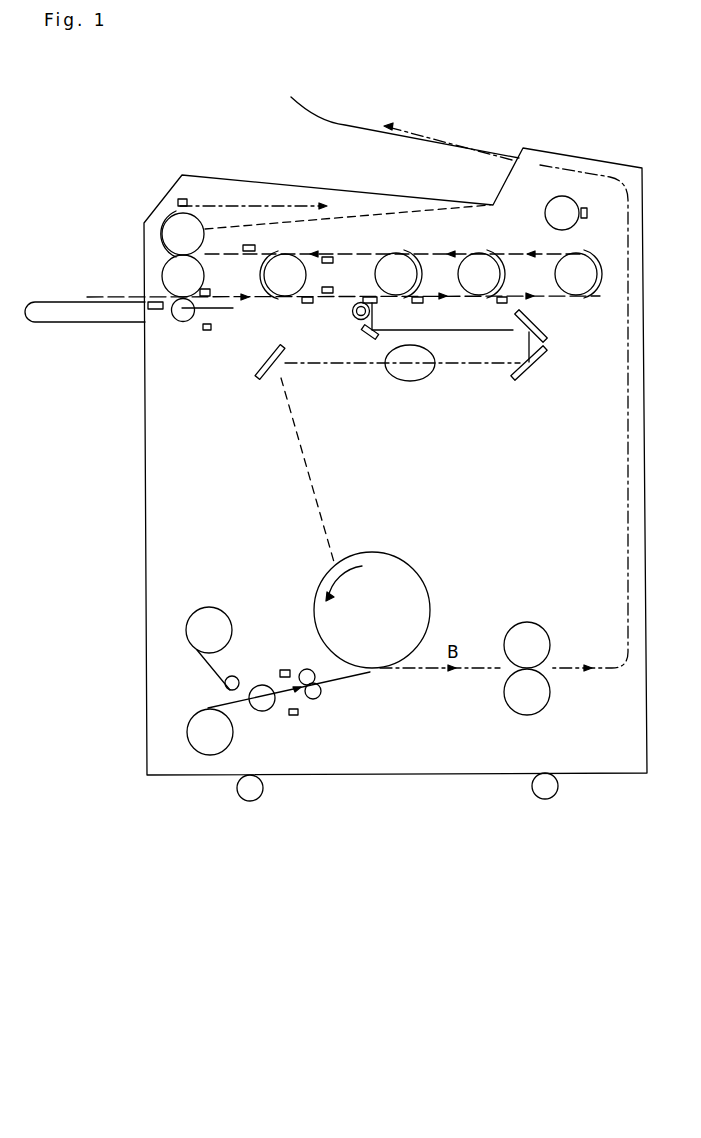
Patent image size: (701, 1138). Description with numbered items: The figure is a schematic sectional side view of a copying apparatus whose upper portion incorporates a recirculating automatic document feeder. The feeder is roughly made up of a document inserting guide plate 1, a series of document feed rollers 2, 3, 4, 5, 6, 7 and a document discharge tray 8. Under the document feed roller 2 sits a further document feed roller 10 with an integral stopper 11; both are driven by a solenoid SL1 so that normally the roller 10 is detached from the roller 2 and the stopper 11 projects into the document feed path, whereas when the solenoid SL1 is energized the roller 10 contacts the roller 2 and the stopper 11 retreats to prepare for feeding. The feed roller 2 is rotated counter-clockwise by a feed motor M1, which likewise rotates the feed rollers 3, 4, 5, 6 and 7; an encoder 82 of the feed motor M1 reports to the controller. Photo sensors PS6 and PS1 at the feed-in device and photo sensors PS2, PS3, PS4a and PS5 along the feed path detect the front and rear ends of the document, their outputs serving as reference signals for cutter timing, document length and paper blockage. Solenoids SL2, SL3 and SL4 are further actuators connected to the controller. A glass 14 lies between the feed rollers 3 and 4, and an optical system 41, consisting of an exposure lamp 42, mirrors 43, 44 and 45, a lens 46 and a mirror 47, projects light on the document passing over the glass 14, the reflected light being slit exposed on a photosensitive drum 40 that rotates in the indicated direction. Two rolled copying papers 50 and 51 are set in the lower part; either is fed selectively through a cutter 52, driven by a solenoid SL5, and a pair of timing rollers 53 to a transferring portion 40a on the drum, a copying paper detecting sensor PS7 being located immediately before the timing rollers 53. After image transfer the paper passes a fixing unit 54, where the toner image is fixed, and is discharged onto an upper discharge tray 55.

The document inserting guide plate 1 is at (80, 298).
The document feed roller 2 is at (160, 274).
The feed roller 3 is at (283, 298).
The feed roller 4 is at (402, 258).
The feed roller 5 is at (480, 257).
The feed roller 6 is at (582, 297).
The feed roller 7 is at (166, 216).
The document discharge tray 8 is at (378, 215).
The document feed roller 10 is at (179, 323).
The stopper 11 is at (233, 308).
The glass 14 is at (378, 301).
The photosensitive drum 40 is at (385, 553).
The transferring portion 40a is at (382, 670).
The optical system 41 is at (488, 355).
The exposure lamp 42 is at (358, 322).
The mirror 43 is at (369, 340).
The mirror 44 is at (548, 343).
The mirror 45 is at (513, 383).
The lens 46 is at (431, 378).
The mirror 47 is at (262, 365).
The rolled copying paper 50 is at (215, 608).
The rolled copying paper 51 is at (207, 708).
The cutter 52 is at (262, 685).
The pair of timing rollers 53 is at (320, 697).
The fixing unit 54 is at (548, 645).
The upper discharge tray 55 is at (368, 127).
The encoder 82 is at (589, 213).
The feed motor M1 is at (562, 213).
The photo sensor PS1 is at (208, 289).
The photo sensor PS2 is at (308, 304).
The photo sensor PS3 is at (328, 287).
The photo sensor PS4a is at (327, 259).
The photo sensor PS5 is at (184, 200).
The photo sensor PS6 is at (155, 310).
The copying paper detecting sensor PS7 is at (285, 668).
The solenoid SL1 is at (209, 331).
The solenoid SL2 is at (421, 303).
The solenoid SL3 is at (503, 303).
The solenoid SL4 is at (249, 246).
The solenoid SL5 is at (290, 718).